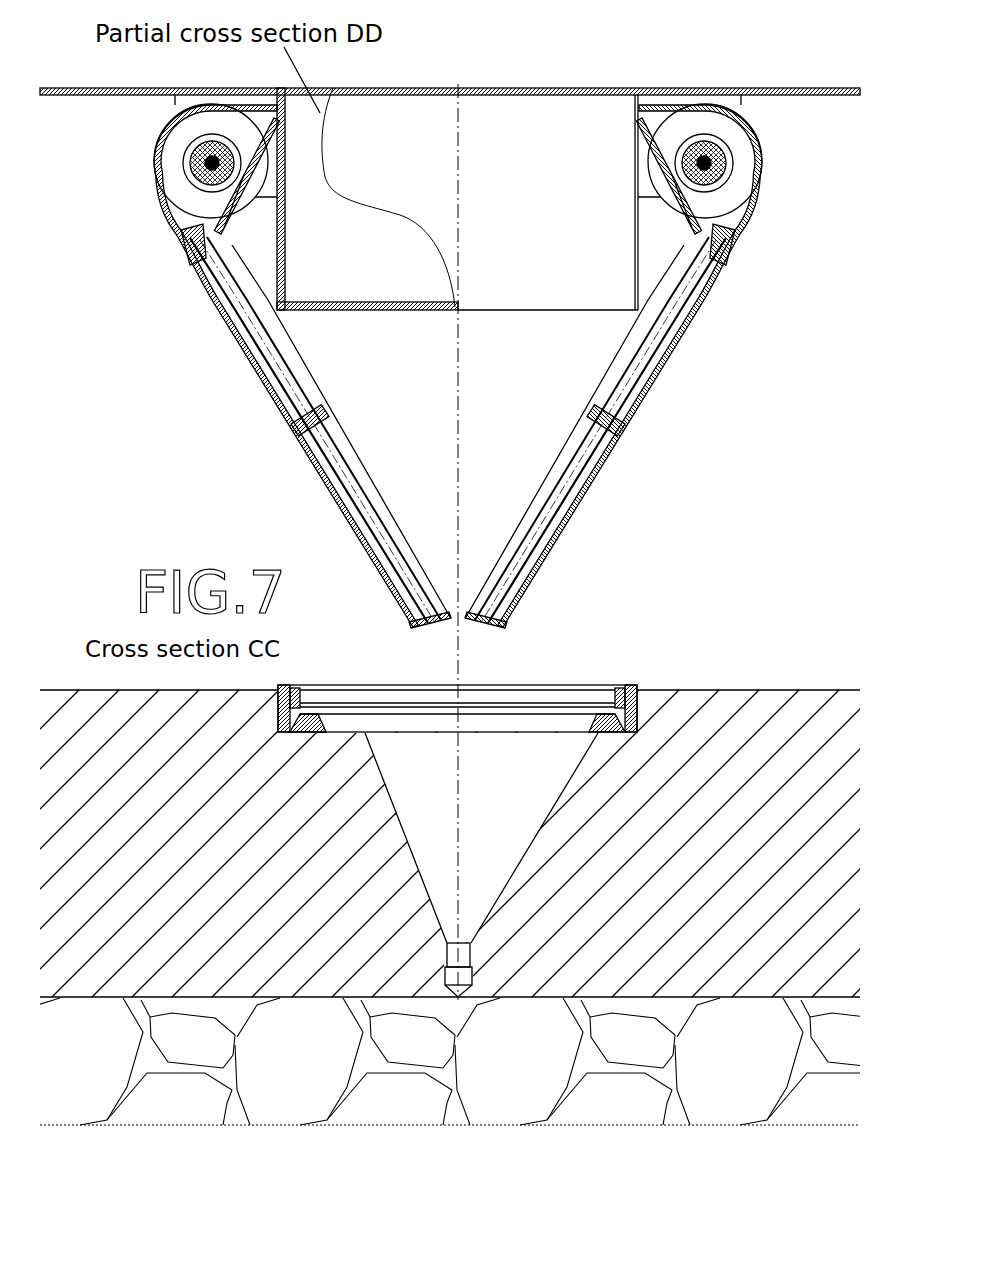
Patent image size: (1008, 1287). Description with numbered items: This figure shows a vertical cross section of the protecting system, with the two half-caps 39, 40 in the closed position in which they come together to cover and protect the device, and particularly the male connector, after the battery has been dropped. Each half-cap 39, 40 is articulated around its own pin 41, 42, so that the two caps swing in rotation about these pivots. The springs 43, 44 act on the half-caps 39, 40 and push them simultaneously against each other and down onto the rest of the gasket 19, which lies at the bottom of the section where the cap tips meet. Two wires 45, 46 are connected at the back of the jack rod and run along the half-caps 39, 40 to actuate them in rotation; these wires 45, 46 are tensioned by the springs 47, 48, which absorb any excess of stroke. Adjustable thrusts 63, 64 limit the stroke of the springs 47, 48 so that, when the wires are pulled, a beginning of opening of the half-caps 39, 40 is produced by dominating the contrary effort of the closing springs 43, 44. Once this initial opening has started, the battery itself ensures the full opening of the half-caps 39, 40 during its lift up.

The gasket 19 is at (640, 687).
The half-cap 39 is at (652, 429).
The half-cap 40 is at (367, 385).
The pin 41 is at (738, 176).
The pin 42 is at (207, 180).
The spring 43 is at (668, 365).
The spring 44 is at (262, 128).
The wire 45 is at (652, 433).
The wire 46 is at (212, 298).
The spring 47 is at (713, 431).
The spring 48 is at (295, 437).
The adjustable thrust 63 is at (774, 240).
The adjustable thrust 64 is at (185, 237).